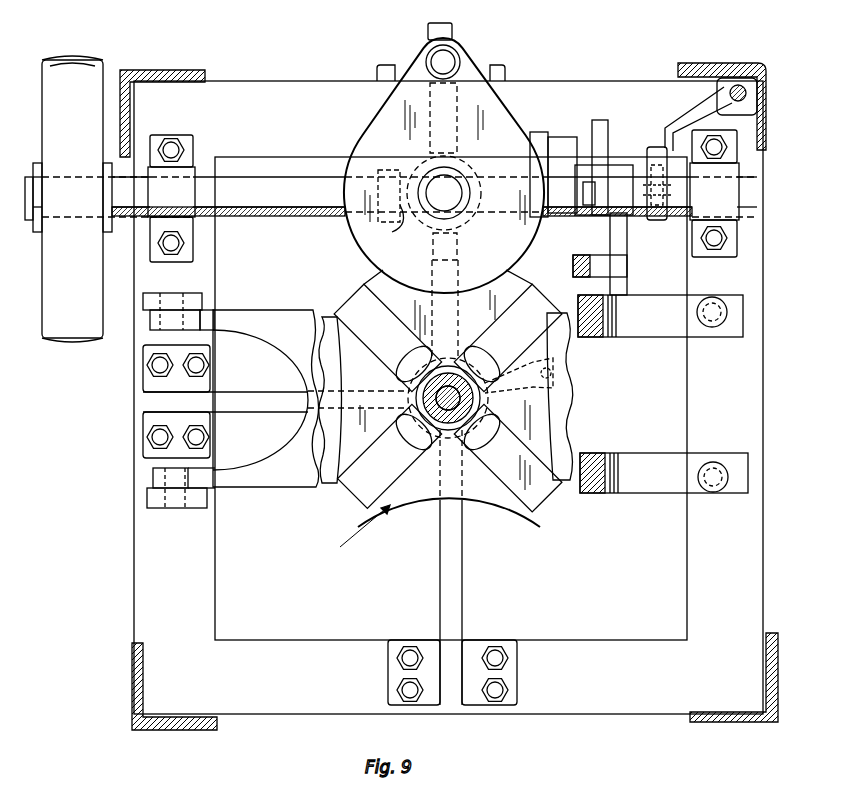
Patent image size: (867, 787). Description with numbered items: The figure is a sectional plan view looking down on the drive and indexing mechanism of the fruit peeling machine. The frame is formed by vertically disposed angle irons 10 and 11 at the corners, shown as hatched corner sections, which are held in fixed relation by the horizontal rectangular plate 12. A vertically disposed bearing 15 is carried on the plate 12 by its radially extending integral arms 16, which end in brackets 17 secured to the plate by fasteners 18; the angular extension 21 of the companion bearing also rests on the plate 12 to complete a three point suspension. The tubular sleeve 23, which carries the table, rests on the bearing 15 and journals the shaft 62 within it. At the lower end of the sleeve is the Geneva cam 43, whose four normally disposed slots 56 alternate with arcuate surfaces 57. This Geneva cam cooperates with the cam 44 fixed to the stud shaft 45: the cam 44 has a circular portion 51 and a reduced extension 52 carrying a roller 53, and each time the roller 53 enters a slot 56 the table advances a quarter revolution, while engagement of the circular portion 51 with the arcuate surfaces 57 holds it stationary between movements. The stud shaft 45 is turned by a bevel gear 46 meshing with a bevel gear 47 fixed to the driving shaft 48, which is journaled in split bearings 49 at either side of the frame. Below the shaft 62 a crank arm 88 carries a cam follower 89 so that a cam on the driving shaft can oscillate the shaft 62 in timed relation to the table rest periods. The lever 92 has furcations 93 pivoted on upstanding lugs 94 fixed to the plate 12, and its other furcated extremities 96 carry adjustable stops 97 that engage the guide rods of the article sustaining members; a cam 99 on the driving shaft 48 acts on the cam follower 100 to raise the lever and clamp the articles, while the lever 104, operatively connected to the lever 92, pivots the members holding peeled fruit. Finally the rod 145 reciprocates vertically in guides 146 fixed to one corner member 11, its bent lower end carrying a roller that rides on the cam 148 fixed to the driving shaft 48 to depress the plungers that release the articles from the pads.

The angle iron 10 is at (165, 72).
The angle iron 11 is at (752, 63).
The rectangular plate 12 is at (206, 580).
The bearing 15 is at (448, 398).
The arm 16 is at (278, 397).
The bracket 17 is at (160, 420).
The fastener 18 is at (158, 440).
The angular extension 21 is at (432, 30).
The tubular sleeve 23 is at (438, 383).
The Geneva cam 43 is at (356, 530).
The cam 44 is at (495, 160).
The stud shaft 45 is at (440, 192).
The bevel gear 46 is at (468, 222).
The bevel gear 47 is at (405, 222).
The driving shaft 48 is at (252, 210).
The split bearing 49 is at (184, 243).
The circular portion 51 is at (397, 274).
The reduced extension 52 is at (388, 102).
The roller 53 is at (458, 56).
The slot 56 is at (393, 340).
The arcuate surface 57 is at (328, 352).
The shaft 62 is at (420, 395).
The crank arm 88 is at (525, 385).
The cam follower 89 is at (540, 135).
The lever 92 is at (592, 337).
The furcation 93 is at (263, 488).
The lug 94 is at (196, 502).
The furcated extremity 96 is at (662, 328).
The stop 97 is at (712, 327).
The cam 99 is at (598, 122).
The cam follower 100 is at (598, 198).
The lever 104 is at (605, 272).
The rod 145 is at (697, 112).
The guide 146 is at (730, 92).
The cam 148 is at (655, 160).